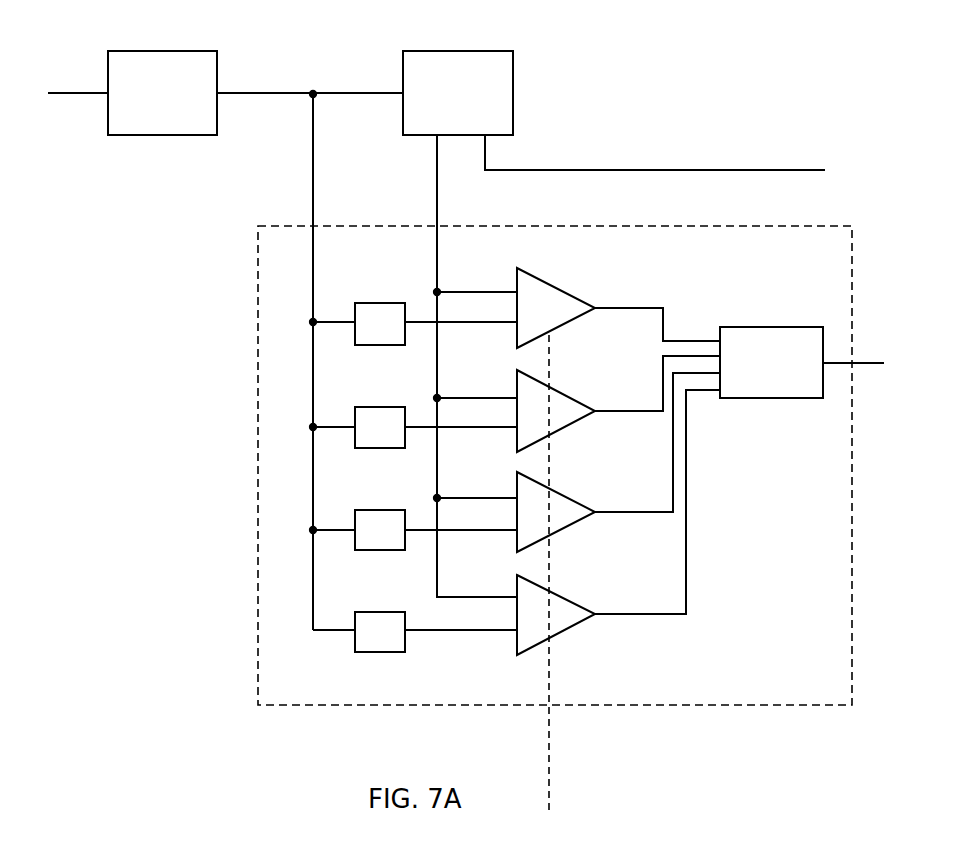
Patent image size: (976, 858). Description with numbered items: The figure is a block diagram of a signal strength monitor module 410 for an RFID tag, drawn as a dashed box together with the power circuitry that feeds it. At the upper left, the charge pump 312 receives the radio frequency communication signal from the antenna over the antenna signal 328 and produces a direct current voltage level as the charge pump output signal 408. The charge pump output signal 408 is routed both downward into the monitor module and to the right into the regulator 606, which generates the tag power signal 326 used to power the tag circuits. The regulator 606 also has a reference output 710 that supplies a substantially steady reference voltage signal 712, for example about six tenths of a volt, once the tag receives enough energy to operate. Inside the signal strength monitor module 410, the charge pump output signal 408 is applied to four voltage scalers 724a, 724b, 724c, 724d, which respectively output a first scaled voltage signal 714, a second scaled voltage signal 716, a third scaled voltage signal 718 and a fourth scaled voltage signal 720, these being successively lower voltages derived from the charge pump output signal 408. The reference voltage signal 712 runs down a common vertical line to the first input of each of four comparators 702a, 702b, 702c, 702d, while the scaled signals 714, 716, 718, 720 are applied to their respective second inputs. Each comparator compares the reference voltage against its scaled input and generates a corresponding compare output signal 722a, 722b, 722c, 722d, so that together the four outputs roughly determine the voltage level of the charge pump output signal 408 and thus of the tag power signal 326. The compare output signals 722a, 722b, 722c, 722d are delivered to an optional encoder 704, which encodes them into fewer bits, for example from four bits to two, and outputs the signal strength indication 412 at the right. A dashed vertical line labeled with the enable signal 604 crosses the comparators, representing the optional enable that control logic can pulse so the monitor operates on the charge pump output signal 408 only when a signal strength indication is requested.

The antenna signal 328 is at (66, 90).
The charge pump 312 is at (196, 51).
The charge pump output signal 408 is at (313, 157).
The regulator 606 is at (490, 51).
The reference output 710 is at (434, 138).
The reference voltage signal 712 is at (438, 196).
The tag power signal 326 is at (744, 168).
The signal strength monitor module 410 is at (786, 226).
The enable signal 604 is at (550, 771).
The first voltage scaler 724a is at (375, 303).
The second voltage scaler 724b is at (374, 407).
The third voltage scaler 724c is at (378, 510).
The fourth voltage scaler 724d is at (372, 612).
The first scaled voltage signal 714 is at (467, 323).
The second scaled voltage signal 716 is at (455, 428).
The third scaled voltage signal 718 is at (452, 531).
The fourth scaled voltage signal 720 is at (440, 631).
The first comparator 702a is at (550, 284).
The second comparator 702b is at (565, 392).
The third comparator 702c is at (565, 490).
The fourth comparator 702d is at (565, 592).
The first compare output signal 722a is at (643, 304).
The second compare output signal 722b is at (614, 413).
The third compare output signal 722c is at (612, 514).
The fourth compare output signal 722d is at (628, 616).
The encoder 704 is at (762, 327).
The signal strength indication 412 is at (873, 362).